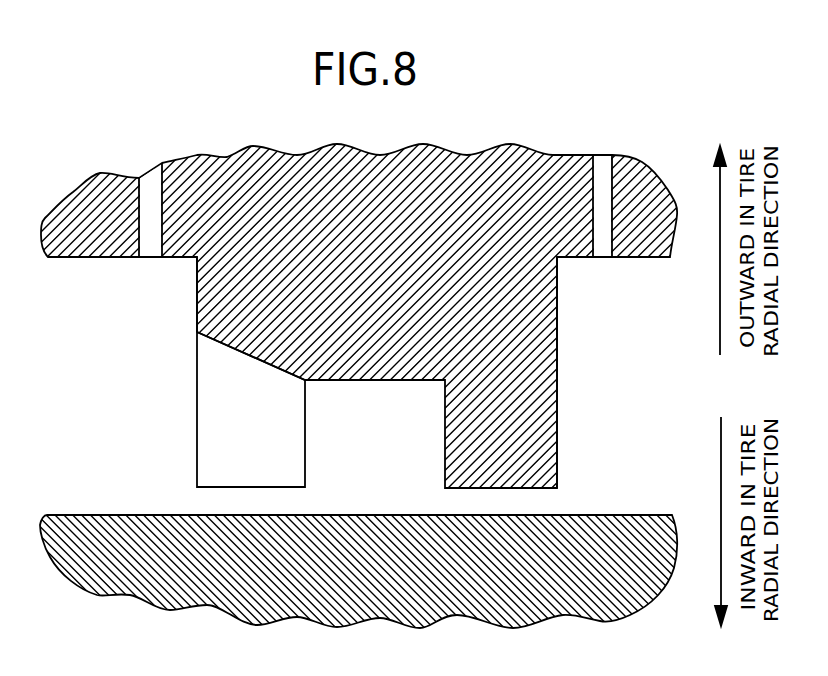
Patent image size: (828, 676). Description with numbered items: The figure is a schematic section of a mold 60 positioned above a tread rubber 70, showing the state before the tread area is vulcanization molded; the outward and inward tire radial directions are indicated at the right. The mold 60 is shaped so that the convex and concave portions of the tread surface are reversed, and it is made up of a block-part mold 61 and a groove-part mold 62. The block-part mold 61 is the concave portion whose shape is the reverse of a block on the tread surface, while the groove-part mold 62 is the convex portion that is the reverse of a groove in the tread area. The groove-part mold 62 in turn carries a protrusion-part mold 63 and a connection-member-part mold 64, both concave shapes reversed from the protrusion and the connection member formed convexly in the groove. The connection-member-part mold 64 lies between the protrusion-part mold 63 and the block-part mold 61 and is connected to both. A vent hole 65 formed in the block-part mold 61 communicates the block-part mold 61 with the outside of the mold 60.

The mold 60 is at (262, 133).
The block-part mold 61 is at (197, 305).
The groove-part mold 62 is at (502, 488).
The protrusion-part mold 63 is at (381, 381).
The connection-member-part mold 64 is at (218, 425).
The vent hole 65 is at (158, 192).
The tread rubber 70 is at (592, 514).